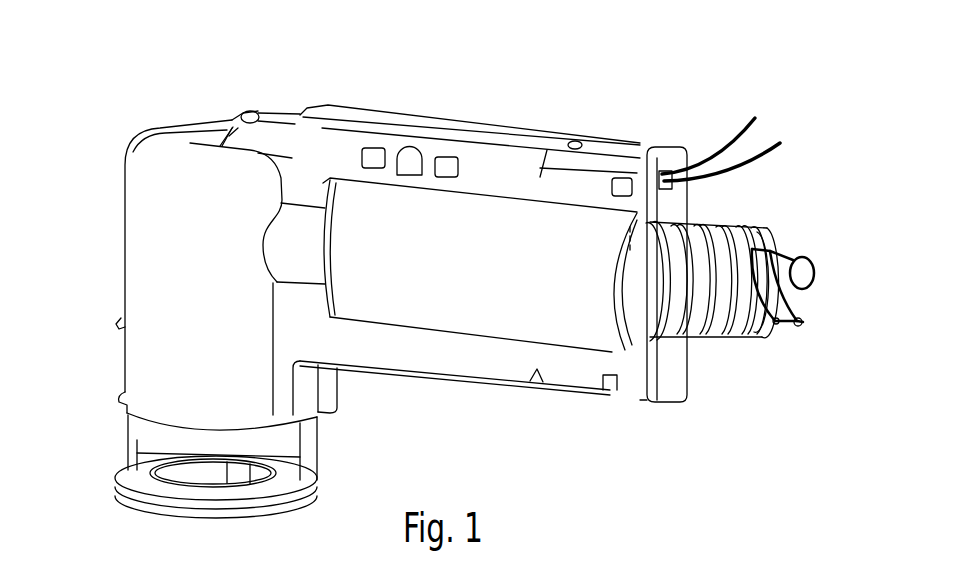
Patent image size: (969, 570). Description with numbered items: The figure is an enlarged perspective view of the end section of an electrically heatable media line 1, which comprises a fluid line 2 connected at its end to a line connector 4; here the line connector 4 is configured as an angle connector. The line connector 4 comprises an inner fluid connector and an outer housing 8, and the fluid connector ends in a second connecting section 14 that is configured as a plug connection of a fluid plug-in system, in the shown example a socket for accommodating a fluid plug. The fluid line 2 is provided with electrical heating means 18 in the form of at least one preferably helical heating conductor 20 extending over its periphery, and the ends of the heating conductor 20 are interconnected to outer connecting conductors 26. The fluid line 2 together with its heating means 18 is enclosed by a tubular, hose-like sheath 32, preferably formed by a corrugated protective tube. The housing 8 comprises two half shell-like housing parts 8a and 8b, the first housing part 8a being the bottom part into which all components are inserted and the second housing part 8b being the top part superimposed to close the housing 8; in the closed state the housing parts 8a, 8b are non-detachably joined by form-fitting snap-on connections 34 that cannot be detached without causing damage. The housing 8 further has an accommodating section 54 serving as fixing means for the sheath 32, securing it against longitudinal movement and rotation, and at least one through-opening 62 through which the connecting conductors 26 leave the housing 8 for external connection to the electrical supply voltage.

The electrically heatable media line 1 is at (746, 383).
The fluid line 2 is at (813, 303).
The line connector 4 is at (229, 106).
The housing 8 is at (155, 236).
The first housing part 8a is at (351, 107).
The second housing part 8b is at (447, 136).
The second connecting section 14 is at (123, 457).
The electrical heating means 18 is at (796, 244).
The heating conductor 20 is at (803, 325).
The connecting conductors 26 is at (780, 140).
The sheath 32 is at (705, 318).
The snap-on connections 34 is at (279, 117).
The accommodating section 54 is at (646, 303).
The through-opening 62 is at (668, 155).